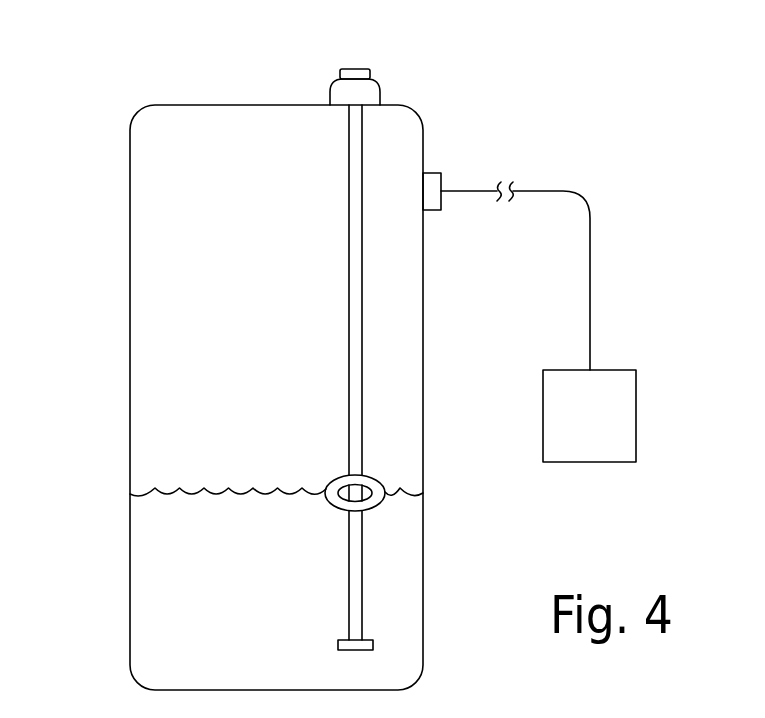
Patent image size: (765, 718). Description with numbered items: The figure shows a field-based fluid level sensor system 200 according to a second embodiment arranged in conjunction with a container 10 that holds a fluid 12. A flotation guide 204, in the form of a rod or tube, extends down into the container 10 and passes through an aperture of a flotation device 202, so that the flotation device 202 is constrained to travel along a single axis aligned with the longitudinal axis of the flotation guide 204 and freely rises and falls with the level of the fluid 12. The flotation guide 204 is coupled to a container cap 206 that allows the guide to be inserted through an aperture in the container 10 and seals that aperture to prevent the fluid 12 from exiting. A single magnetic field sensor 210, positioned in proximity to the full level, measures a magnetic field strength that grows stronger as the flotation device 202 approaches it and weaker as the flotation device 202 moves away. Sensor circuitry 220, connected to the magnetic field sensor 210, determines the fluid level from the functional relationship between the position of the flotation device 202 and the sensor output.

The fluid level sensor system 200 is at (88, 84).
The container 10 is at (130, 252).
The fluid 12 is at (221, 588).
The flotation device 202 is at (332, 482).
The flotation guide 204 is at (349, 295).
The container cap 206 is at (362, 69).
The magnetic field sensor 210 is at (433, 210).
The sensor circuitry 220 is at (617, 370).